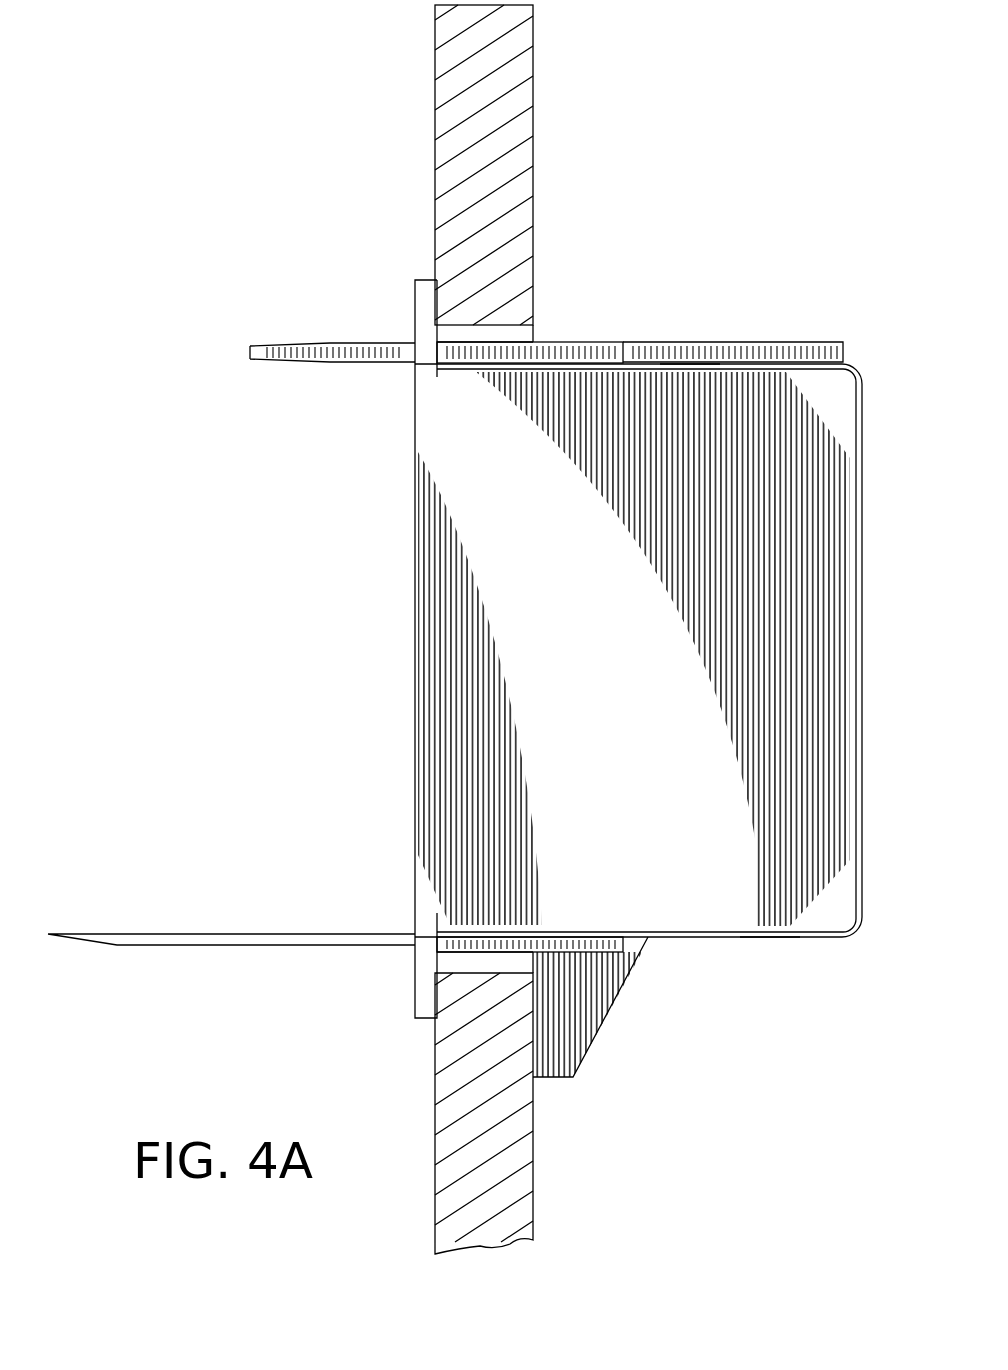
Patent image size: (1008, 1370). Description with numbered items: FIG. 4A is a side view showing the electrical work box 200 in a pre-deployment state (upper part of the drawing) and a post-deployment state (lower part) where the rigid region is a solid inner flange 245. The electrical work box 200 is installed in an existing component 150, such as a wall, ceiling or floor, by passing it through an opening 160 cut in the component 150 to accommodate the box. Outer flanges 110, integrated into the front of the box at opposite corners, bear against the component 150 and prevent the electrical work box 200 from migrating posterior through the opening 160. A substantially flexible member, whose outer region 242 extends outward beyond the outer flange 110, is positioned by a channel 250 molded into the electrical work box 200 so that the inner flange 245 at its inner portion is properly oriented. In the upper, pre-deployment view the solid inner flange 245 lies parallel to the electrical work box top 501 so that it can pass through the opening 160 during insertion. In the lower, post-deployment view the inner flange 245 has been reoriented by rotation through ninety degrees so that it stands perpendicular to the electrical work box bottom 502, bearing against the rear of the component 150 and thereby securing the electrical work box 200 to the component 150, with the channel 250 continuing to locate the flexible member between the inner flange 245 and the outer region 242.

The component 150 is at (435, 97).
The outer flange 110 is at (423, 312).
The opening 160 is at (528, 336).
The channel 250 is at (598, 343).
The inner flange 245 is at (753, 340).
The electrical work box 200 is at (390, 617).
The outer region 242 is at (130, 948).
The electrical work box top 501 is at (689, 362).
The electrical work box bottom 502 is at (773, 940).